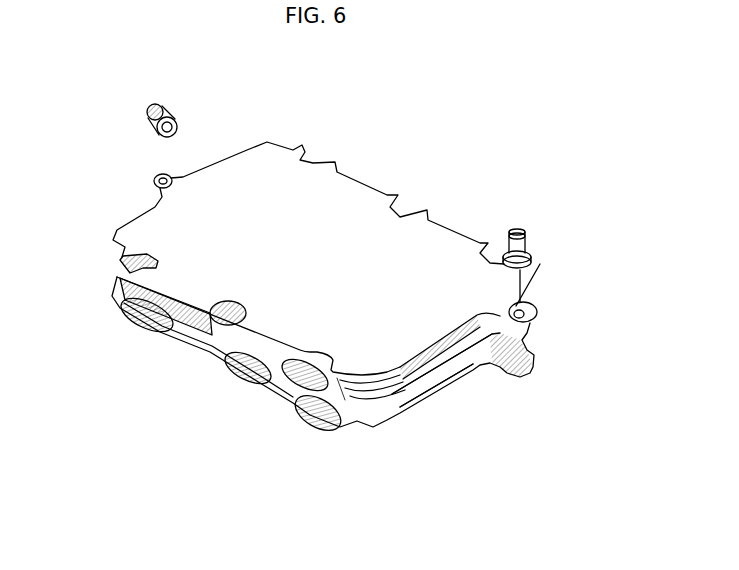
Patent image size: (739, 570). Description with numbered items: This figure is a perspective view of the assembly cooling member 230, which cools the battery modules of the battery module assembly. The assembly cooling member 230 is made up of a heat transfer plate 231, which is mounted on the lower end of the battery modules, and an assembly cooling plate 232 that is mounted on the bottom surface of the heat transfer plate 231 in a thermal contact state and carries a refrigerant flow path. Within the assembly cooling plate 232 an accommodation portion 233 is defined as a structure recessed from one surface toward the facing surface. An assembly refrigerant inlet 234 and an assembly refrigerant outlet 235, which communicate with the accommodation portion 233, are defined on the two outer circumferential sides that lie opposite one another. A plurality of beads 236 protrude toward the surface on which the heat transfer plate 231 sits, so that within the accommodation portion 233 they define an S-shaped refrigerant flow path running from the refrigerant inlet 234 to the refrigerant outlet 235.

The assembly cooling member 230 is at (125, 102).
The heat transfer plate 231 is at (396, 171).
The assembly cooling plate 232 is at (446, 422).
The accommodation portion 233 is at (145, 293).
The assembly refrigerant inlet 234 is at (540, 264).
The assembly refrigerant outlet 235 is at (153, 176).
The beads 236 is at (402, 393).